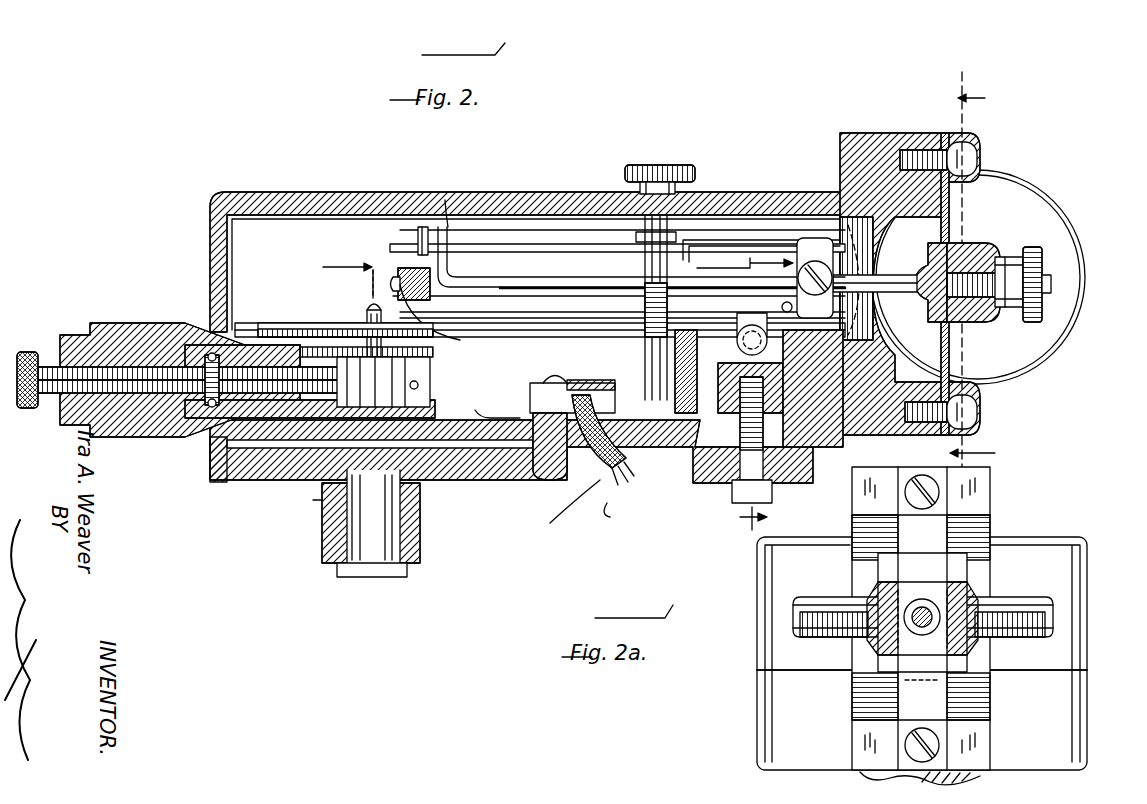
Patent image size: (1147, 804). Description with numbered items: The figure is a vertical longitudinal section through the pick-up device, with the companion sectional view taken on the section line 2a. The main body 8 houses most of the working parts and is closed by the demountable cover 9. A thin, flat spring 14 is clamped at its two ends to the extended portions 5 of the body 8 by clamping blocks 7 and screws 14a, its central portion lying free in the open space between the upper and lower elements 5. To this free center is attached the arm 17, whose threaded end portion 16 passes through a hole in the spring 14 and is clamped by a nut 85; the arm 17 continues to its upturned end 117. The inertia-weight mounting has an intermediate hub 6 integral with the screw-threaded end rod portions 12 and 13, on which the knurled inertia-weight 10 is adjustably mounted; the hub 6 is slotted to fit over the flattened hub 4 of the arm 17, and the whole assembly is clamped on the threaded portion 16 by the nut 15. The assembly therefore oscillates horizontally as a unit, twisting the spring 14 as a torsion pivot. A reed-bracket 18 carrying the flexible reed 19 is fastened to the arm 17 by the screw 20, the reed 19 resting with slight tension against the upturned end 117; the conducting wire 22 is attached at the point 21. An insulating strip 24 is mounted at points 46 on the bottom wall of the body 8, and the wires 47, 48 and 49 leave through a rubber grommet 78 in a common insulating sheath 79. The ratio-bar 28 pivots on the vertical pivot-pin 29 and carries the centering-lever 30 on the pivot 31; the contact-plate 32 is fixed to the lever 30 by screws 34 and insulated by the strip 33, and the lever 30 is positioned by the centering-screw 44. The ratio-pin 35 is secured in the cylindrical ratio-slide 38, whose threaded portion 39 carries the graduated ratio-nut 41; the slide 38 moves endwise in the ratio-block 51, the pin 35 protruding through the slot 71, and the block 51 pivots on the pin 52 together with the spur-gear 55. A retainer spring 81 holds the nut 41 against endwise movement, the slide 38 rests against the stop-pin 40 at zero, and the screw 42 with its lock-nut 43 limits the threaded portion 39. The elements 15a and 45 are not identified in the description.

In FIG. 2, the section line 2a is at (988, 270).
In FIG. 2, the hub of the arm 4 is at (937, 252).
In FIG. 2A, the hub of the arm 4 is at (927, 588).
In FIG. 2, the extended portions of the body 5 is at (852, 158).
In FIG. 2A, the extended portions of the body 5 is at (970, 503).
In FIG. 2, the intermediate hub 6 is at (983, 250).
In FIG. 2A, the intermediate hub 6 is at (960, 647).
In FIG. 2, the clamping blocks 7 is at (973, 137).
In FIG. 2, the main body 8 is at (670, 437).
In FIG. 2A, the main body 8 is at (760, 718).
In FIG. 2, the demountable cover 9 is at (322, 212).
In FIG. 2A, the demountable cover 9 is at (760, 573).
In FIG. 2, the inertia-weight 10 is at (1063, 230).
In FIG. 2A, the end rod portion 12 is at (1033, 597).
In FIG. 2, the end rod portion 13 is at (875, 283).
In FIG. 2A, the end rod portion 13 is at (820, 597).
In FIG. 2, the flat spring 14 is at (960, 200).
In FIG. 2A, the flat spring 14 is at (960, 533).
In FIG. 2, the screws 14a is at (973, 150).
In FIG. 2A, the screws 14a is at (932, 492).
In FIG. 2, the nut 15 is at (1042, 263).
In FIG. 2, the direction arrow 15a is at (745, 388).
In FIG. 2, the threaded end portion 16 is at (1051, 287).
In FIG. 2A, the threaded end portion 16 is at (927, 647).
In FIG. 2, the arm 17 is at (470, 283).
In FIG. 2, the reed-bracket 18 is at (717, 238).
In FIG. 2, the reed 19 is at (550, 250).
In FIG. 2, the screw 20 is at (825, 212).
In FIG. 2, the attachment point 21 is at (877, 312).
In FIG. 2, the electrically conducting wire 22 is at (783, 306).
In FIG. 2, the insulating strip 24 is at (600, 383).
In FIG. 2, the ratio-bar 28 is at (475, 410).
In FIG. 2, the vertical pivot-pin 29 is at (862, 437).
In FIG. 2, the centering-lever 30 is at (563, 317).
In FIG. 2, the vertical pivot 31 is at (508, 304).
In FIG. 2, the contact-plate 32 is at (420, 236).
In FIG. 2, the insulating strip 33 is at (417, 258).
In FIG. 2, the screws 34 is at (393, 284).
In FIG. 2, the ratio-pin 35 is at (367, 318).
In FIG. 2, the cylindrical ratio-slide 38 is at (397, 368).
In FIG. 2, the screw-threaded portion 39 is at (287, 370).
In FIG. 2, the stop-pin 40 is at (418, 386).
In FIG. 2, the ratio-nut 41 is at (140, 435).
In FIG. 2, the screw 42 is at (40, 350).
In FIG. 2, the lock-nut 43 is at (80, 420).
In FIG. 2, the centering-screw 44 is at (740, 318).
In FIG. 2, the adjusting knob 45 is at (628, 180).
In FIG. 2, the mounting points 46 is at (550, 375).
In FIG. 2, the wire 47 is at (633, 487).
In FIG. 2, the wire 48 is at (627, 493).
In FIG. 2, the wire 49 is at (610, 517).
In FIG. 2, the ratio-block 51 is at (197, 417).
In FIG. 2, the pin 52 is at (363, 525).
In FIG. 2, the spur-gear 55 is at (270, 437).
In FIG. 2, the endwise slot 71 is at (287, 363).
In FIG. 2, the rubber grommet 78 is at (567, 440).
In FIG. 2, the insulating sheath 79 is at (462, 340).
In FIG. 2, the retainer spring 81 is at (205, 355).
In FIG. 2, the nut 85 is at (973, 242).
In FIG. 2A, the nut 85 is at (907, 633).
In FIG. 2, the upturned end 117 is at (445, 215).